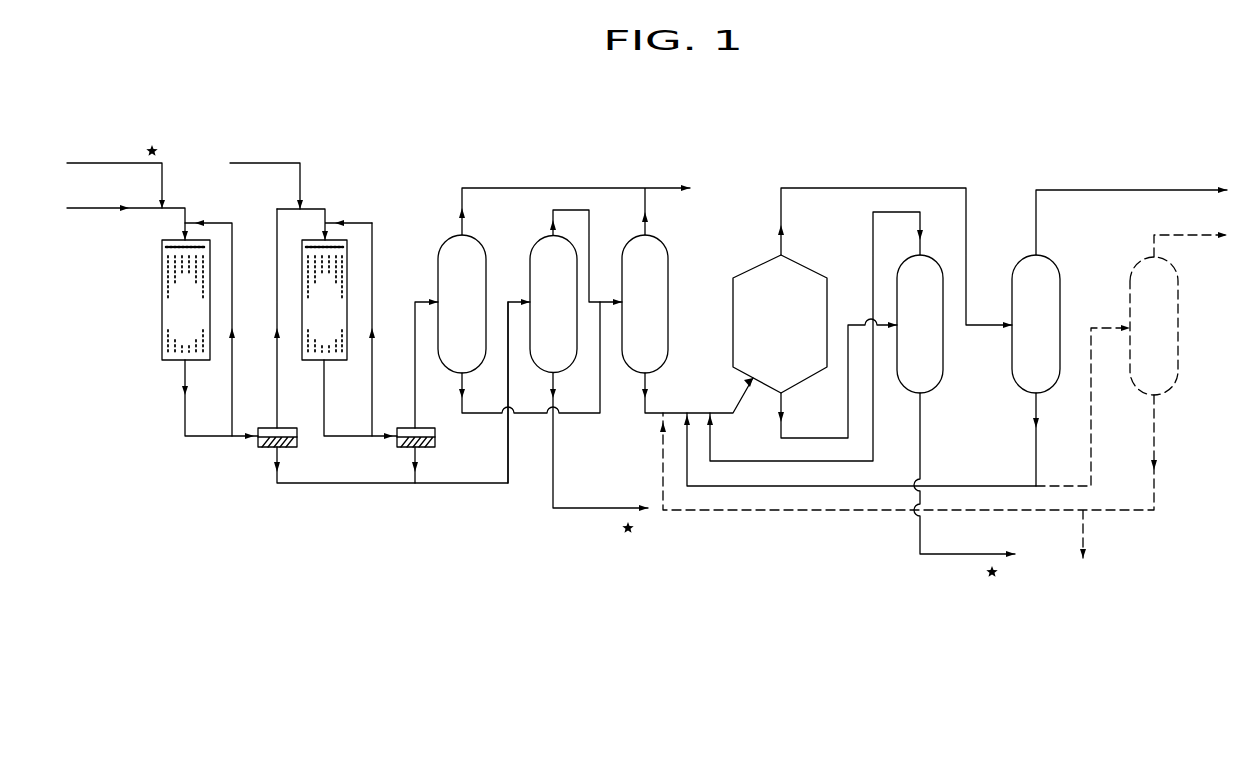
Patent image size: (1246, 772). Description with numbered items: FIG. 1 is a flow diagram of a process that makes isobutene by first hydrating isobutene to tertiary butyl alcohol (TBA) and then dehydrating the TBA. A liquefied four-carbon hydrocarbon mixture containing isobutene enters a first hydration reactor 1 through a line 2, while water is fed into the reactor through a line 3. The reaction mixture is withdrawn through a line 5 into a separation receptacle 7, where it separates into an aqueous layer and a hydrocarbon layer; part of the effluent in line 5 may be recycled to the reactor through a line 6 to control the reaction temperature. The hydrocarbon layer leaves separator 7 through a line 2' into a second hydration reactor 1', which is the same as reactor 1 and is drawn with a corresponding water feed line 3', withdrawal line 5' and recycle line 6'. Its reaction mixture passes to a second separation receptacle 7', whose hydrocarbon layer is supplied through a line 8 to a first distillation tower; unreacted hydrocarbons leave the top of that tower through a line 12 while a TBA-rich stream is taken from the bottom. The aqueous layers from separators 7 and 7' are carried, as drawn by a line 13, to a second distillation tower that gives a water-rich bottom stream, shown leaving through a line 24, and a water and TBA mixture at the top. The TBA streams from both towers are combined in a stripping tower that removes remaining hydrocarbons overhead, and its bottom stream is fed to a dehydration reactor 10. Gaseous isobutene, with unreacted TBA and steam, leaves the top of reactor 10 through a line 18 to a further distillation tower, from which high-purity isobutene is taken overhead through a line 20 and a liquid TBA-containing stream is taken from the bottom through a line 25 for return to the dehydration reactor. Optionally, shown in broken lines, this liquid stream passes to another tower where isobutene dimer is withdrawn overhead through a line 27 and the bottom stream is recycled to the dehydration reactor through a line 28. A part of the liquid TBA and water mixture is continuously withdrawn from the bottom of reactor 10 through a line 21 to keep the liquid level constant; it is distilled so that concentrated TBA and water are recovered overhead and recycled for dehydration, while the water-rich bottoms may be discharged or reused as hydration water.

The first reactor (hydration reactor) 1 is at (160, 300).
The first reactor (second hydration reactor) 1' is at (354, 300).
The line 2 is at (127, 228).
The line 2' is at (307, 210).
The line 3 is at (116, 164).
The regeneration gas line to second vessel 3' is at (266, 164).
The line 5 is at (201, 399).
The second vessel outlet line 5' is at (342, 399).
The line 6 is at (210, 328).
The second recycle line 6' is at (355, 329).
The separation receptacle (separator) 7 is at (386, 347).
The separation receptacle 7' is at (435, 455).
The line 8 is at (415, 380).
The second reactor (dehydration reactor) 10 is at (733, 325).
The line 12 is at (584, 188).
The feed line to separator 13 is at (508, 362).
The line 18 is at (891, 188).
The line 20 is at (1120, 190).
The line 21 is at (812, 438).
The bottoms withdrawal line 24 is at (594, 508).
The line 25 is at (1036, 447).
The line 27 is at (1170, 235).
The line 28 is at (1007, 510).